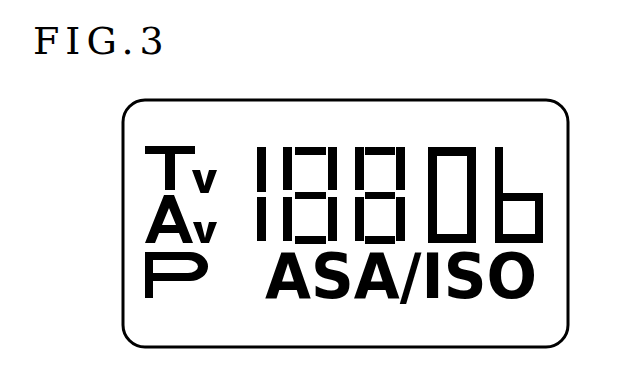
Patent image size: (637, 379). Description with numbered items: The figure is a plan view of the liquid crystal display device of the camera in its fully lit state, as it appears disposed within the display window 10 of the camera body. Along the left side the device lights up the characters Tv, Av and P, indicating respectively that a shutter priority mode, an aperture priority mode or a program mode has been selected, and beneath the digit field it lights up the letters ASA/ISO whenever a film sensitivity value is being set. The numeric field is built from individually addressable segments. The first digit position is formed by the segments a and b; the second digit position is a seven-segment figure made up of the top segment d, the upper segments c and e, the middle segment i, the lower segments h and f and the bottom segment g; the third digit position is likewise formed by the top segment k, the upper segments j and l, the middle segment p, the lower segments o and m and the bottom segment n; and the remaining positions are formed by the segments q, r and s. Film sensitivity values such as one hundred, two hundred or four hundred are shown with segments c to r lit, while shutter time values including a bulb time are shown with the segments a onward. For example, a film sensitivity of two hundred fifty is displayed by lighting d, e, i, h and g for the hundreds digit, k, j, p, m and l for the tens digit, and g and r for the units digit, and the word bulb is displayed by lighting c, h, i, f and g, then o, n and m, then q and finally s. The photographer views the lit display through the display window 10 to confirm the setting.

The display window 10 is at (513, 100).
The segment a is at (257, 170).
The segment b is at (257, 215).
The segment c is at (283, 168).
The segment d is at (303, 148).
The segment e is at (337, 170).
The segment f is at (337, 214).
The segment g is at (296, 242).
The segment h is at (283, 230).
The segment i is at (305, 199).
The segment j is at (362, 172).
The segment k is at (372, 148).
The segment l is at (401, 168).
The segment m is at (405, 213).
The segment n is at (376, 244).
The segment o is at (363, 221).
The segment p is at (369, 200).
The segment q is at (436, 192).
The segment r is at (476, 168).
The segment s is at (503, 168).